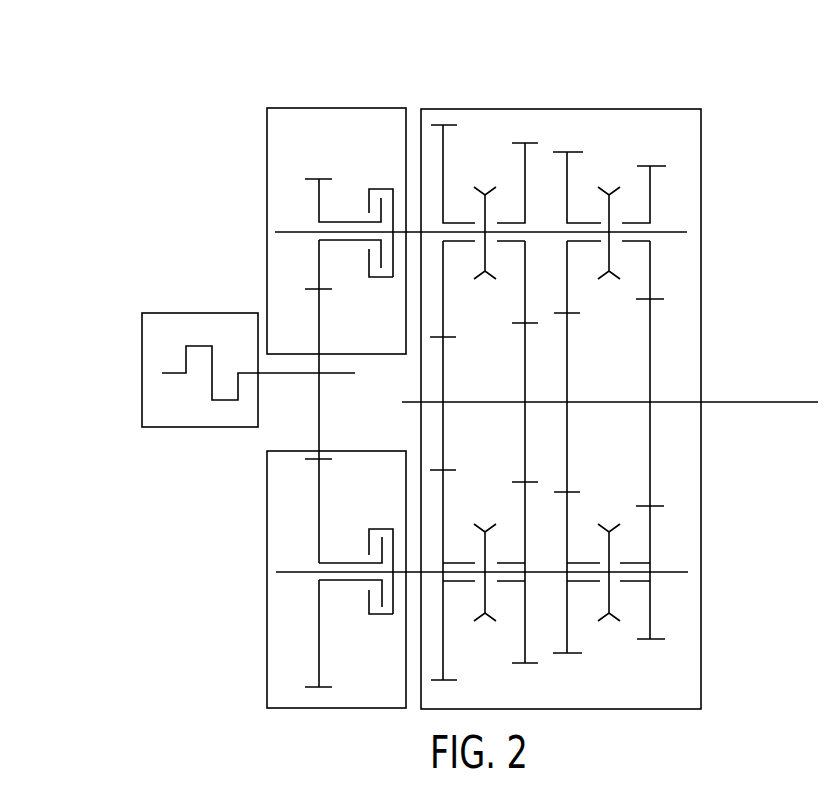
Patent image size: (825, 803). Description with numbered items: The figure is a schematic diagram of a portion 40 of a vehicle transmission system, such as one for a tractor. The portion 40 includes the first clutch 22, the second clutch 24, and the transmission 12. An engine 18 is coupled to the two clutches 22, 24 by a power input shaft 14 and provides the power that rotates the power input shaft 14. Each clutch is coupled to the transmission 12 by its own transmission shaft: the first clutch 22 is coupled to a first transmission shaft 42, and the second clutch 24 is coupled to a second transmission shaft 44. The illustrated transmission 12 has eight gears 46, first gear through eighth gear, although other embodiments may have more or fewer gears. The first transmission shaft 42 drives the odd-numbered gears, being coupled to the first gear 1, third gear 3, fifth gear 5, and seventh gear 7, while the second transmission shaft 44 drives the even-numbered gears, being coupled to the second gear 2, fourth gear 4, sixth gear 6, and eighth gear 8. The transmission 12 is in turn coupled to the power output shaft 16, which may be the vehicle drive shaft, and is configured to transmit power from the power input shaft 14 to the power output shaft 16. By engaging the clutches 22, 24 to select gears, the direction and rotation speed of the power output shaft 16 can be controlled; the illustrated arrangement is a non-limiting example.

The portion of the transmission system 40 is at (698, 78).
The transmission 12 is at (701, 659).
The engine 18 is at (142, 368).
The power input shaft 14 is at (295, 374).
The first clutch 22 is at (340, 108).
The second clutch 24 is at (267, 517).
The first transmission shaft 42 is at (667, 232).
The second transmission shaft 44 is at (667, 572).
The power output shaft 16 is at (792, 403).
The gears 46 is at (640, 263).
The first gear 1 is at (644, 284).
The second gear 2 is at (642, 520).
The third gear 3 is at (577, 277).
The fourth gear 4 is at (576, 527).
The fifth gear 5 is at (517, 272).
The sixth gear 6 is at (517, 532).
The seventh gear 7 is at (452, 263).
The eighth gear 8 is at (452, 541).